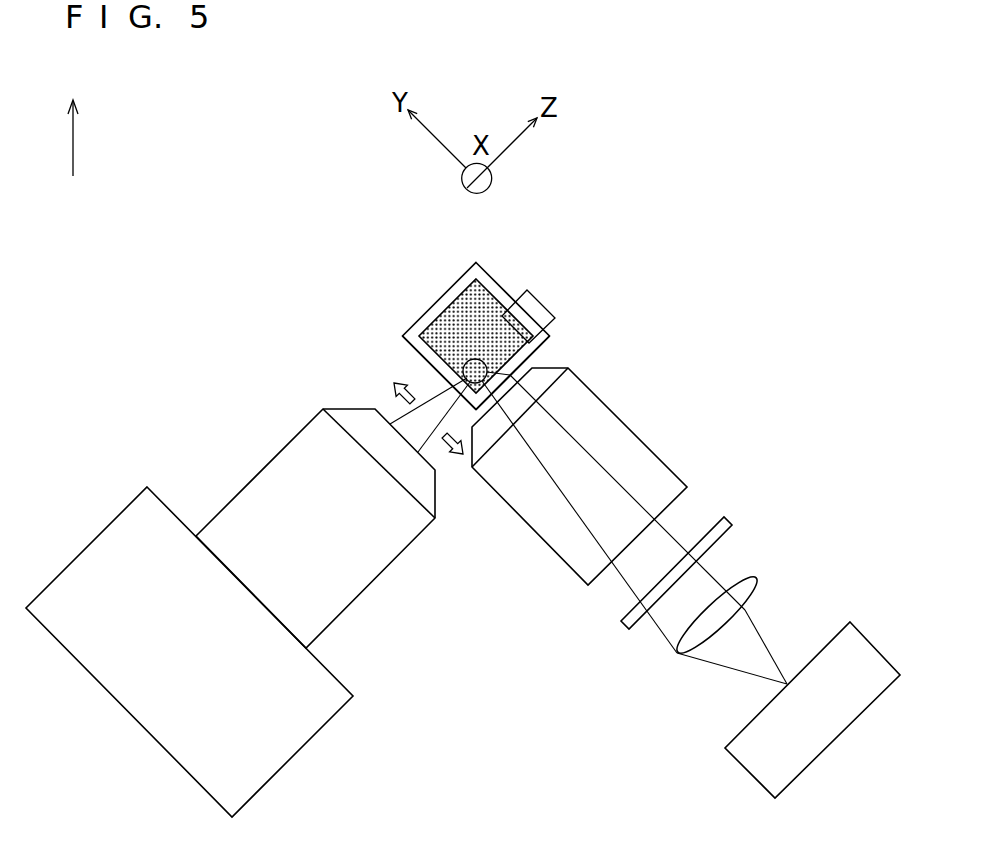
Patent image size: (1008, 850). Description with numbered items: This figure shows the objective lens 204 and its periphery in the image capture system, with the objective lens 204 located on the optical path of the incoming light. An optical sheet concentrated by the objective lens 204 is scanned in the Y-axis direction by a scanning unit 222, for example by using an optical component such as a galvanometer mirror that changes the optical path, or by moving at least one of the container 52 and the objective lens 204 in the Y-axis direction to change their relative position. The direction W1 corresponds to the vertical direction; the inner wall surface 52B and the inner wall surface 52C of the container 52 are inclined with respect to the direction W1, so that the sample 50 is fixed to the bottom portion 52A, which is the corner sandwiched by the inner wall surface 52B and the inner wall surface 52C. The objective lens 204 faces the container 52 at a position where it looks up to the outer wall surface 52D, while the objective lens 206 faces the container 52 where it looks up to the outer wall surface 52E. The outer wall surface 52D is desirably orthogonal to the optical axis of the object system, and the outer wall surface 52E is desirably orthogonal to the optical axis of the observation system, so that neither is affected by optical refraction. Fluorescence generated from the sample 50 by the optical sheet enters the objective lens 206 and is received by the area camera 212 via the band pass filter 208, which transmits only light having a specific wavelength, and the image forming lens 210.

The direction W1 is at (74, 135).
The sample 50 is at (465, 379).
The container 52 is at (493, 281).
The bottom portion 52A is at (476, 384).
The inner wall surface 52B is at (442, 348).
The inner wall surface 52C is at (543, 303).
The outer wall surface 52D is at (458, 386).
The outer wall surface 52E is at (521, 371).
The objective lens 204 is at (359, 592).
The objective lens 206 is at (590, 394).
The band pass filter 208 is at (723, 519).
The image forming lens 210 is at (747, 576).
The area camera 212 is at (743, 770).
The scanning unit 222 is at (293, 757).